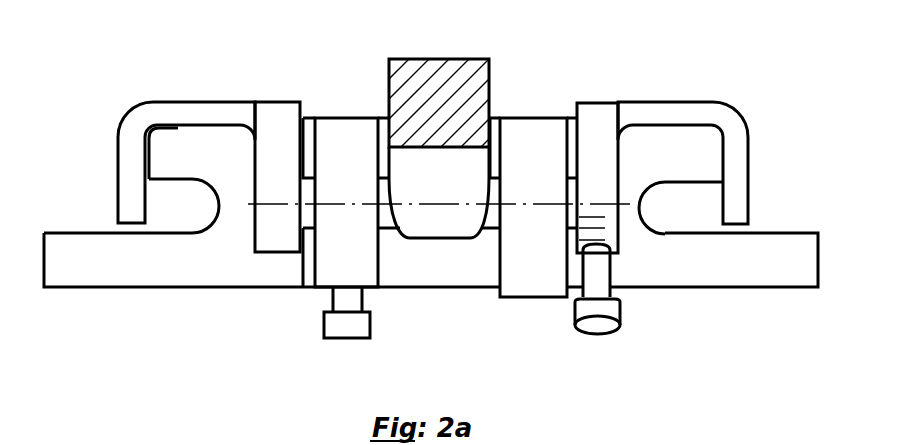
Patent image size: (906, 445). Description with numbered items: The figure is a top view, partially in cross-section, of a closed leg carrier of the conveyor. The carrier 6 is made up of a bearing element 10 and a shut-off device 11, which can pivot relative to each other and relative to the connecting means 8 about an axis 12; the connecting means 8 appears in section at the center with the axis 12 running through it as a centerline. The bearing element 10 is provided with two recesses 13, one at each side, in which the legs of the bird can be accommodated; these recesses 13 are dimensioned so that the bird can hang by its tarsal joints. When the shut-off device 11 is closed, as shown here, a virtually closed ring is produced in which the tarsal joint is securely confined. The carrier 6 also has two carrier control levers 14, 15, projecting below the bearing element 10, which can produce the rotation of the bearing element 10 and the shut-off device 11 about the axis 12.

The carrier 6 is at (112, 308).
The connecting means 8 is at (470, 124).
The bearing element 10 is at (431, 254).
The shut-off device 11 is at (595, 131).
The axis 12 is at (337, 250).
The recesses 13 is at (433, 117).
The carrier control lever 14 is at (348, 335).
The carrier control lever 15 is at (598, 312).